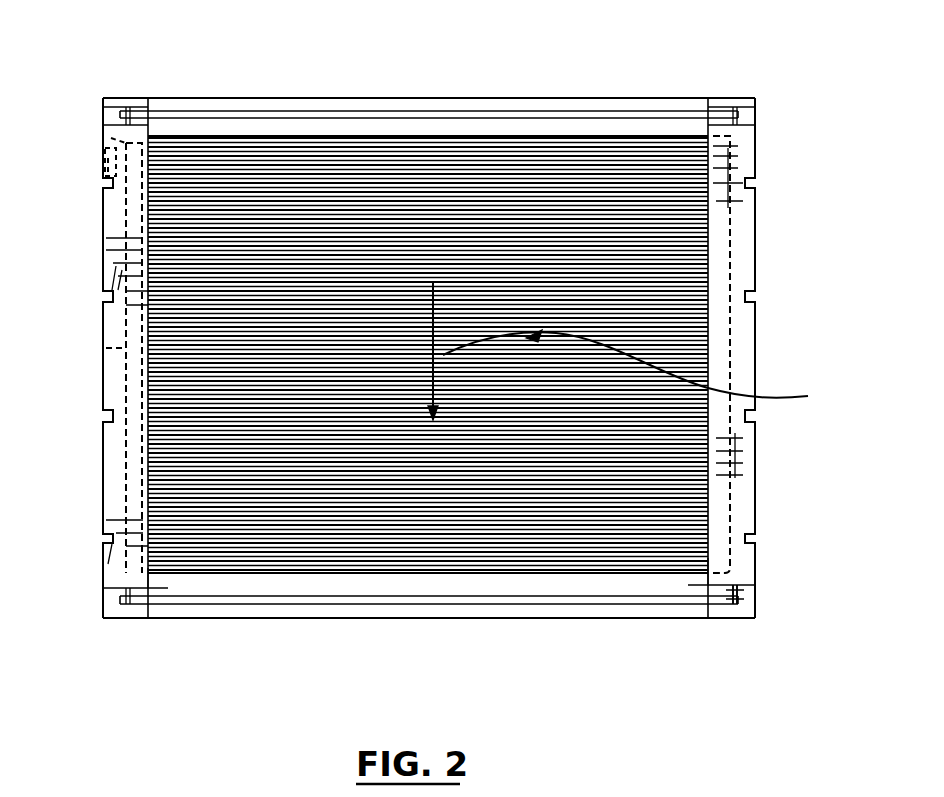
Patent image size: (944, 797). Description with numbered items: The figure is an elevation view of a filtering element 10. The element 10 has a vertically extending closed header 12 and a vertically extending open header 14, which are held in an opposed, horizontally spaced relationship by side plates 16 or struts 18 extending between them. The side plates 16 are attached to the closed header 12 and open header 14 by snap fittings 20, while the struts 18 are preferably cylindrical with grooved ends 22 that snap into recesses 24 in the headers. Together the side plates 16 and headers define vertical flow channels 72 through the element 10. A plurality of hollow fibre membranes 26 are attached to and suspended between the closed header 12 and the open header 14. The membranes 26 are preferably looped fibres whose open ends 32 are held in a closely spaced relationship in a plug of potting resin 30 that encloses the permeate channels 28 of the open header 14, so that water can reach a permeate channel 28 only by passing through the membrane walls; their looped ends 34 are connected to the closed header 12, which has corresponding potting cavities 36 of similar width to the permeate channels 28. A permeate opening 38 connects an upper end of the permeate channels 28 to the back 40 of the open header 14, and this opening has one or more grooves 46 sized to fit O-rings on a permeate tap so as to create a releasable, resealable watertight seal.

The filtering element 10 is at (785, 325).
The closed header 12 is at (748, 127).
The open header 14 is at (95, 226).
The side plate 16 is at (633, 92).
The strut 18 is at (677, 100).
The snap fitting 20 is at (768, 262).
The grooved end 22 is at (730, 582).
The recess 24 is at (735, 594).
The hollow fibre membrane 26 is at (541, 150).
The permeate channel 28 is at (98, 340).
The potting resin 30 is at (143, 133).
The open end 32 is at (159, 580).
The looped end 34 is at (673, 574).
The potting cavity 36 is at (745, 178).
The permeate opening 38 is at (92, 148).
The back of the open header 40 is at (95, 488).
The groove 46 is at (100, 132).
The vertical flow channel 72 is at (644, 369).